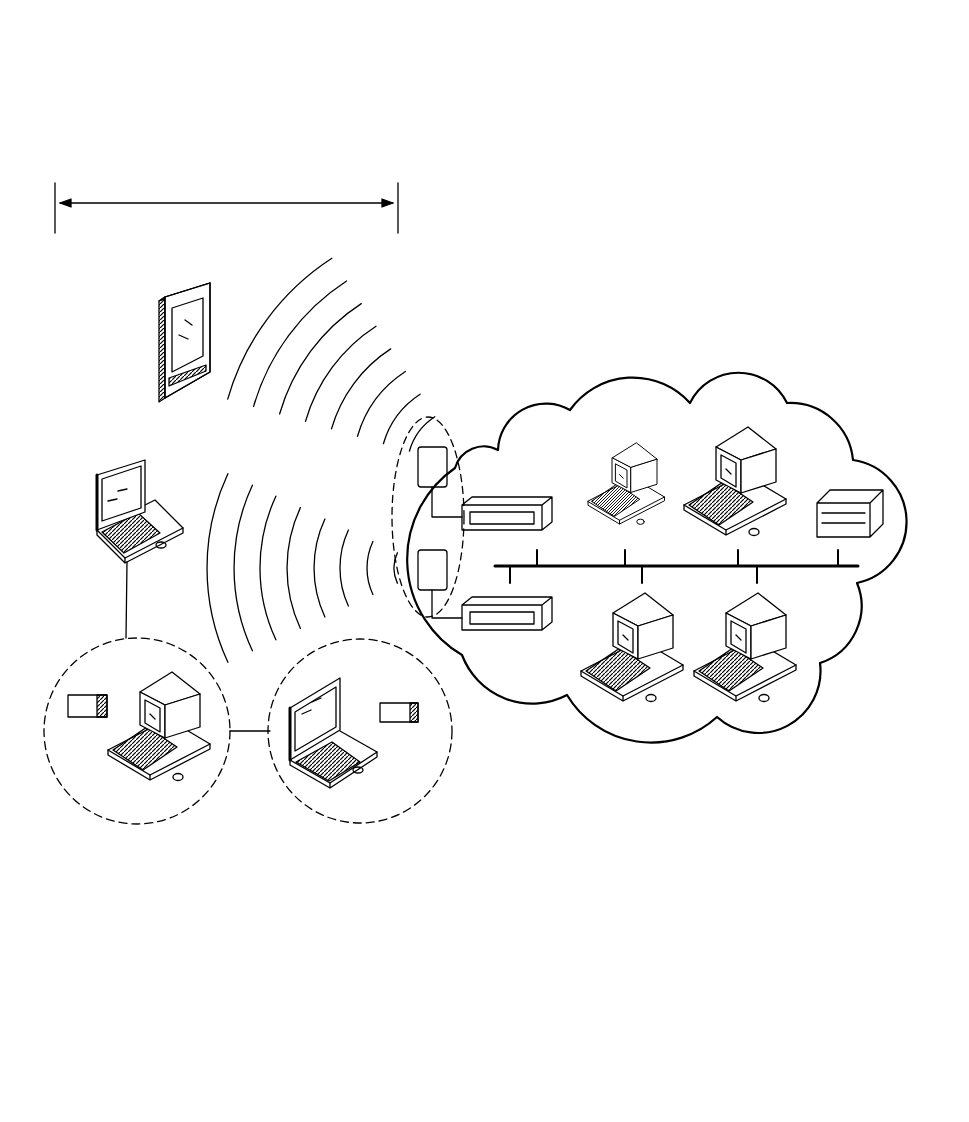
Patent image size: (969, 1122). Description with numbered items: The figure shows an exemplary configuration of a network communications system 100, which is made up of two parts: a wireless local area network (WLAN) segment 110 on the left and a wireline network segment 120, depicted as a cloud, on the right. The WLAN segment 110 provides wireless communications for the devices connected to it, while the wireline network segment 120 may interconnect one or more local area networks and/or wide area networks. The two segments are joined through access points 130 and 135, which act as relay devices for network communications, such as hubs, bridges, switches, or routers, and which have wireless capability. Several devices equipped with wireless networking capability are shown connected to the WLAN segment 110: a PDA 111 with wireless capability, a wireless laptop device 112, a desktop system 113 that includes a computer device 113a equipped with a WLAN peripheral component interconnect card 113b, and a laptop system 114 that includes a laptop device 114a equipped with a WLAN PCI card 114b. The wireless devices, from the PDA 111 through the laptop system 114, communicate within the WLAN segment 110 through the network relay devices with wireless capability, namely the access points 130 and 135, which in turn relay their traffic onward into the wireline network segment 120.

The network communications system 100 is at (482, 41).
The WLAN segment 110 is at (273, 174).
The PDA 111 is at (162, 351).
The wireless laptop device 112 is at (119, 470).
The desktop system 113 is at (157, 754).
The computer device 113a is at (173, 671).
The WLAN peripheral component interconnect card 113b is at (92, 694).
The laptop system 114 is at (385, 766).
The laptop device 114a is at (305, 773).
The WLAN PCI card 114b is at (421, 711).
The wireline network segment 120 is at (755, 372).
The access point 130 is at (510, 510).
The access point 135 is at (518, 632).